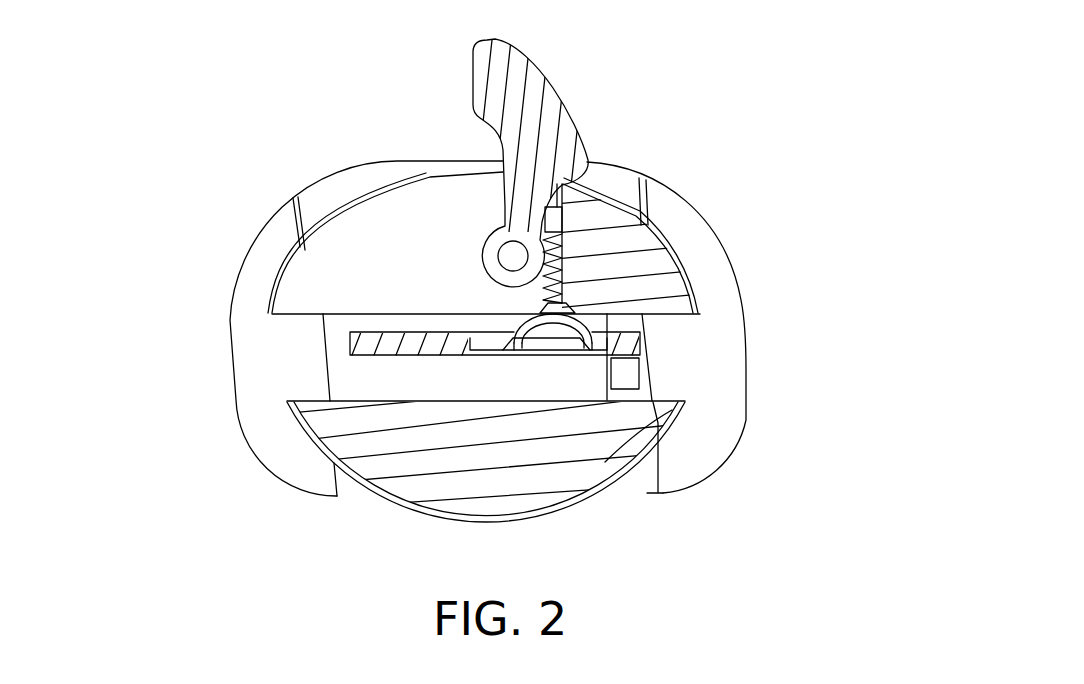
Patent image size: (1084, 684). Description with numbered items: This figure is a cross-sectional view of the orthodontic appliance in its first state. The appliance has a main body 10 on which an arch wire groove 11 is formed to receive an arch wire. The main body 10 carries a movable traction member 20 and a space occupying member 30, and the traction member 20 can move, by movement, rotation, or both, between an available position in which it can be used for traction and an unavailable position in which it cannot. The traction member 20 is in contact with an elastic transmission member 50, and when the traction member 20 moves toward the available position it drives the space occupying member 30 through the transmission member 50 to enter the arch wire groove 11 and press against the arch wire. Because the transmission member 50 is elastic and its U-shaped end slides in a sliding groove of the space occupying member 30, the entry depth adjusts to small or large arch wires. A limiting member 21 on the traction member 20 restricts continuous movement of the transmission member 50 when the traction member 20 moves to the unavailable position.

The main body 10 is at (687, 407).
The arch wire groove 11 is at (397, 383).
The traction member 20 is at (540, 147).
The limiting member 21 is at (487, 276).
The space occupying member 30 is at (397, 343).
The transmission member 50 is at (617, 308).